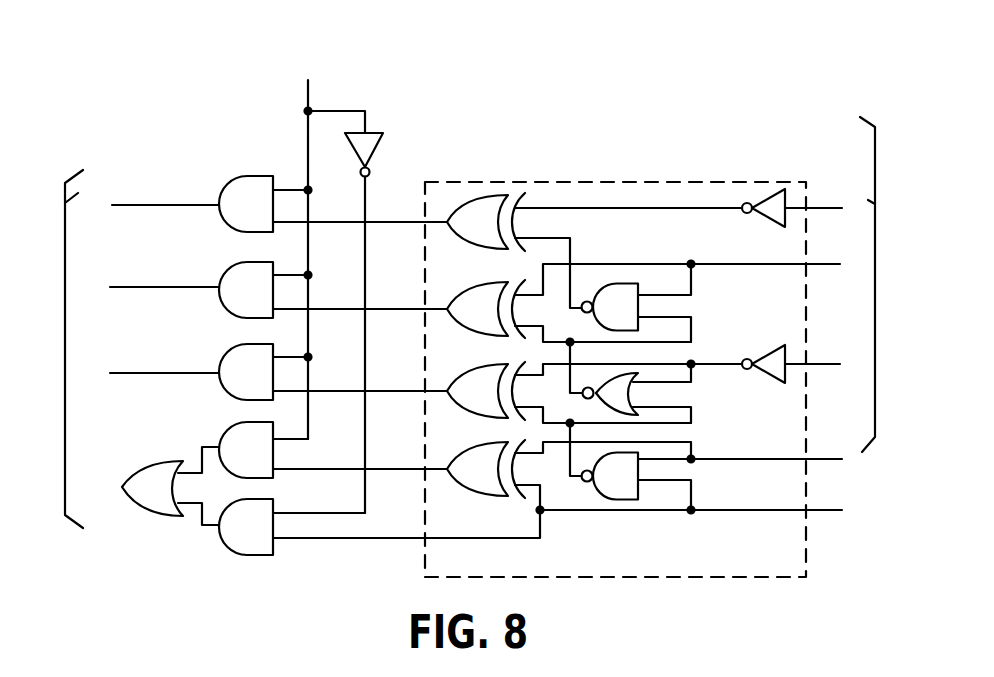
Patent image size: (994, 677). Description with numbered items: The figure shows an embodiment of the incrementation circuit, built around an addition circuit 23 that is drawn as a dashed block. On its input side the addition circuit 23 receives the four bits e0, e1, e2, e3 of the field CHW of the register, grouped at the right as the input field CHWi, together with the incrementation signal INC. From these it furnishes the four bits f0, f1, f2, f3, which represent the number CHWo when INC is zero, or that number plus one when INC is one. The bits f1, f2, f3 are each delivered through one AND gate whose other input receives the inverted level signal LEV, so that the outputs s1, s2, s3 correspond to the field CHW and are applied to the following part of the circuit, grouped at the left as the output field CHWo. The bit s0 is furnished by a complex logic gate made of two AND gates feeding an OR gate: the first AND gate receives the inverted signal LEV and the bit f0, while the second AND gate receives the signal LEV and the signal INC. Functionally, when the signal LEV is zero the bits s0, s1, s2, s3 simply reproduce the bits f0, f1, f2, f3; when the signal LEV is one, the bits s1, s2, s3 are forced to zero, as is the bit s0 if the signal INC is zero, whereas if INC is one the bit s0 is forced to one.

The addition circuit 23 is at (668, 181).
The LEV signal LEV is at (340, 274).
The field CHW input bits CHWi is at (107, 328).
The number CHWo is at (824, 269).
The bit s3 is at (148, 205).
The bit s2 is at (158, 287).
The bit s1 is at (140, 373).
The bit s0 is at (112, 487).
The bit f3 is at (403, 222).
The bit f2 is at (395, 309).
The bit f1 is at (402, 391).
The bit f0 is at (398, 469).
The bit e3 is at (824, 208).
The bit e2 is at (835, 264).
The bit e1 is at (833, 364).
The bit e0 is at (842, 459).
The incrementation signal INC is at (837, 511).